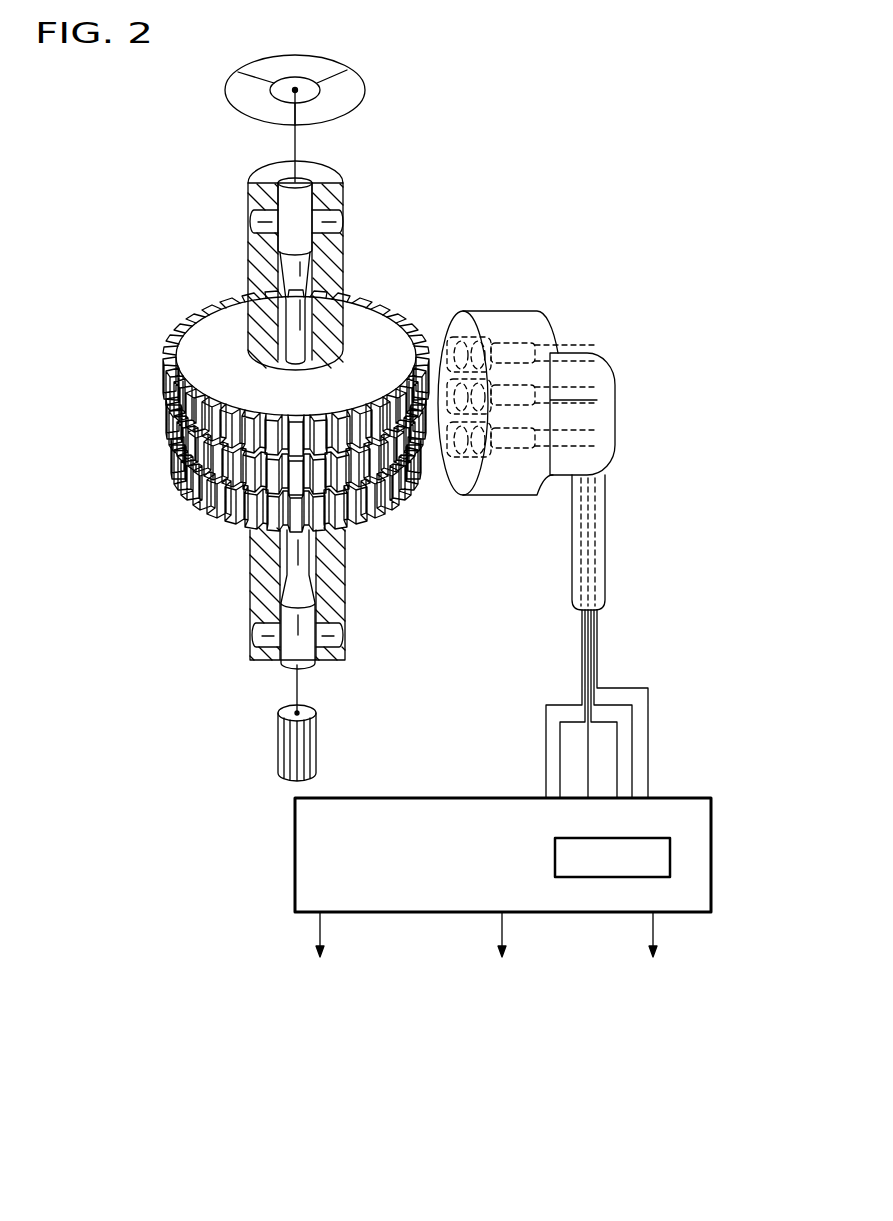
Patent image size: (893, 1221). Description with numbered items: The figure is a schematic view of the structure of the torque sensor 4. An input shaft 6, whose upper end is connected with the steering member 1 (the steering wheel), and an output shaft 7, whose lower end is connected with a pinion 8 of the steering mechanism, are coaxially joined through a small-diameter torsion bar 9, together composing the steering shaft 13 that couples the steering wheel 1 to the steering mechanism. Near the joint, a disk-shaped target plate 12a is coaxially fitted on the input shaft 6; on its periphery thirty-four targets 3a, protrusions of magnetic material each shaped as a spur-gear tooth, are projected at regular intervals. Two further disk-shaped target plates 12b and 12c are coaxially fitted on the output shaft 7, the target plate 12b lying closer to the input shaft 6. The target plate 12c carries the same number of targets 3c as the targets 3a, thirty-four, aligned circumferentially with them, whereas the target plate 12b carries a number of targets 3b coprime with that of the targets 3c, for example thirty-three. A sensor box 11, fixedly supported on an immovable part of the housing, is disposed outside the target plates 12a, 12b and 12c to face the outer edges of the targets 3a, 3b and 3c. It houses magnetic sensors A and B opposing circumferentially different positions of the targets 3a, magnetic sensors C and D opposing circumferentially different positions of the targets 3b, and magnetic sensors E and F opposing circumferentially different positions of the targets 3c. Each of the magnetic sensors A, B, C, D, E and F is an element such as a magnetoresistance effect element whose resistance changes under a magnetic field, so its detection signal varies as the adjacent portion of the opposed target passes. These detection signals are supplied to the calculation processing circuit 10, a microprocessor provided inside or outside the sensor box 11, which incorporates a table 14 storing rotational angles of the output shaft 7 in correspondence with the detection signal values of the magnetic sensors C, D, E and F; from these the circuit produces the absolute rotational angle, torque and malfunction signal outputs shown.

The steering member 1 is at (367, 81).
The torque sensor 4 is at (550, 117).
The steering shaft 13 is at (348, 203).
The input shaft 6 is at (340, 250).
The torsion bar 9 is at (288, 280).
The targets 3a is at (160, 343).
The targets 3b is at (170, 432).
The targets 3c is at (193, 493).
The target plate 12a is at (203, 327).
The target plate 12b is at (170, 383).
The target plate 12c is at (180, 460).
The output shaft 7 is at (345, 593).
The pinion 8 is at (318, 737).
The sensor box 11 is at (535, 328).
The magnetic sensor A is at (451, 335).
The magnetic sensor B is at (470, 330).
The magnetic sensor C is at (575, 385).
The magnetic sensor D is at (580, 400).
The magnetic sensor E is at (585, 415).
The magnetic sensor F is at (590, 432).
The calculation processing circuit 10 is at (294, 822).
The table 14 is at (612, 841).